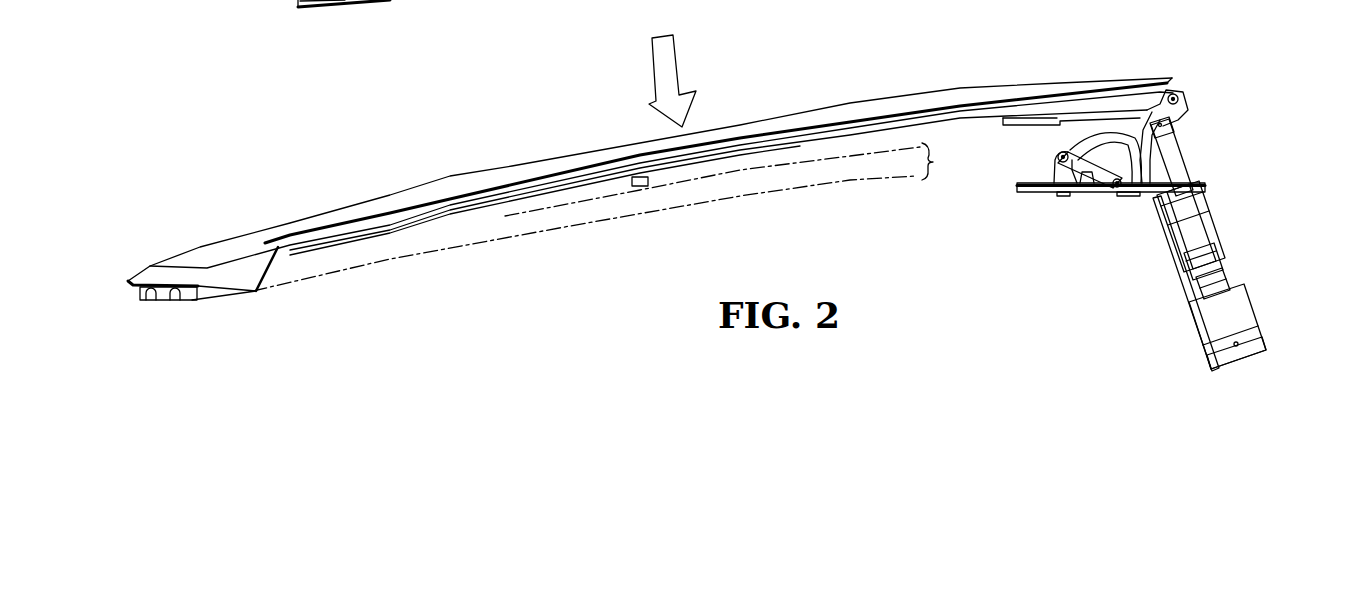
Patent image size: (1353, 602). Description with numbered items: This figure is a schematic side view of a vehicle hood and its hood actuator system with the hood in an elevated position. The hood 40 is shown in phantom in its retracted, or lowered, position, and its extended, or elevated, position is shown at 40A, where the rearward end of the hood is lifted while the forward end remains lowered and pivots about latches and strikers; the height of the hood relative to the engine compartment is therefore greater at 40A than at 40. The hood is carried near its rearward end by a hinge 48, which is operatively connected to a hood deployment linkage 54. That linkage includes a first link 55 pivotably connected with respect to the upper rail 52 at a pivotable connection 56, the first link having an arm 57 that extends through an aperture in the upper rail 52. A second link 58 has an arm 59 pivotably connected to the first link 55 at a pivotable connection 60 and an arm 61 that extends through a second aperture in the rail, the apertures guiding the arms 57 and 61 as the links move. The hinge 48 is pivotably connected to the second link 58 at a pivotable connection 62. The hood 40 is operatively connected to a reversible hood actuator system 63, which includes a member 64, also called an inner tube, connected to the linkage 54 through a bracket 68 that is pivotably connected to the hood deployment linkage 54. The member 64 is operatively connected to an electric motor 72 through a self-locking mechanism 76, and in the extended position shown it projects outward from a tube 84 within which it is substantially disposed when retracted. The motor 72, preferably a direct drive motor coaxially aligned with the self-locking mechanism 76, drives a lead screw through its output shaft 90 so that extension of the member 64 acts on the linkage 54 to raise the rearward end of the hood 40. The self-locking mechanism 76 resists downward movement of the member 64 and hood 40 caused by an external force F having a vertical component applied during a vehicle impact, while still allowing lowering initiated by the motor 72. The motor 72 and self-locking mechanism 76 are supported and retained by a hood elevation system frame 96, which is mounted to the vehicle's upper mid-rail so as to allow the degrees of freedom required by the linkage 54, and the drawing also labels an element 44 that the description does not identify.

The hood 40 is at (397, 262).
The hood in elevated position 40A is at (368, 200).
The flap 44 is at (513, 158).
The external force F is at (676, 52).
The hinge 48 is at (1060, 120).
The upper rail 52 is at (1020, 186).
The hood deployment linkage 54 is at (1188, 137).
The first link 55 is at (1087, 173).
The pivotable connection 56 is at (1117, 188).
The arm 57 is at (1064, 193).
The second link 58 is at (1107, 127).
The arm 59 is at (1088, 133).
The pivotable connection 60 is at (1060, 157).
The arm 61 is at (1182, 150).
The pivotable connection 62 is at (1177, 95).
The reversible hood actuator system 63 is at (1225, 236).
The member 64 is at (1190, 173).
The bracket 68 is at (1187, 113).
The electric motor 72 is at (1240, 315).
The self-locking mechanism 76 is at (1203, 210).
The tube 84 is at (1198, 235).
The output shaft 90 is at (1210, 267).
The hood elevation system frame 96 is at (1178, 262).